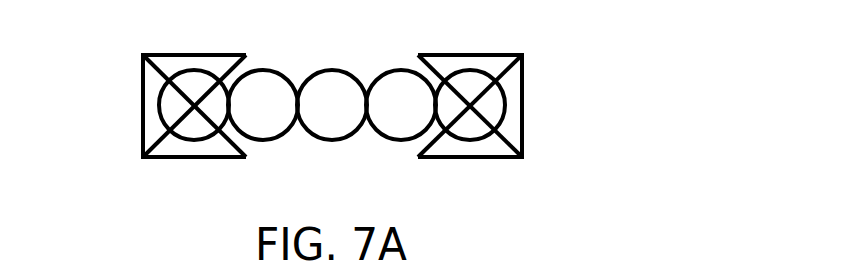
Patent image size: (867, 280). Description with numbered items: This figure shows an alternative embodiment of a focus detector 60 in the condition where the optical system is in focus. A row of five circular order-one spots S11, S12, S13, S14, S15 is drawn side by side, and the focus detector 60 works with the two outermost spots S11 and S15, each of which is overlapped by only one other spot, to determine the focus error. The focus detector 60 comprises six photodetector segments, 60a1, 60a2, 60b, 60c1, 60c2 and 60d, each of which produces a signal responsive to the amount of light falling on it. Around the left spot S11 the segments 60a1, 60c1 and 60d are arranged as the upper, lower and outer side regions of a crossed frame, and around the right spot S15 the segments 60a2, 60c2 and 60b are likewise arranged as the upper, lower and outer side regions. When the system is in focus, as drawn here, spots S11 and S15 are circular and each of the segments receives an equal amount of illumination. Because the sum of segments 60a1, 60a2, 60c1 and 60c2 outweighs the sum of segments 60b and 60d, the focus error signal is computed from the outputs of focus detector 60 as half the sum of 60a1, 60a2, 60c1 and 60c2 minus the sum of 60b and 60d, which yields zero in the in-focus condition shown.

The focus detector 60 is at (322, 105).
The photodetector segment 60a1 is at (177, 63).
The photodetector segment 60a2 is at (495, 63).
The photodetector segment 60b is at (513, 107).
The photodetector segment 60c1 is at (177, 150).
The photodetector segment 60c2 is at (497, 148).
The photodetector segment 60d is at (152, 116).
The order 1 spot S11 is at (194, 133).
The spot S12 is at (263, 133).
The spot S13 is at (332, 133).
The spot S14 is at (401, 133).
The order 1 spot S15 is at (470, 133).